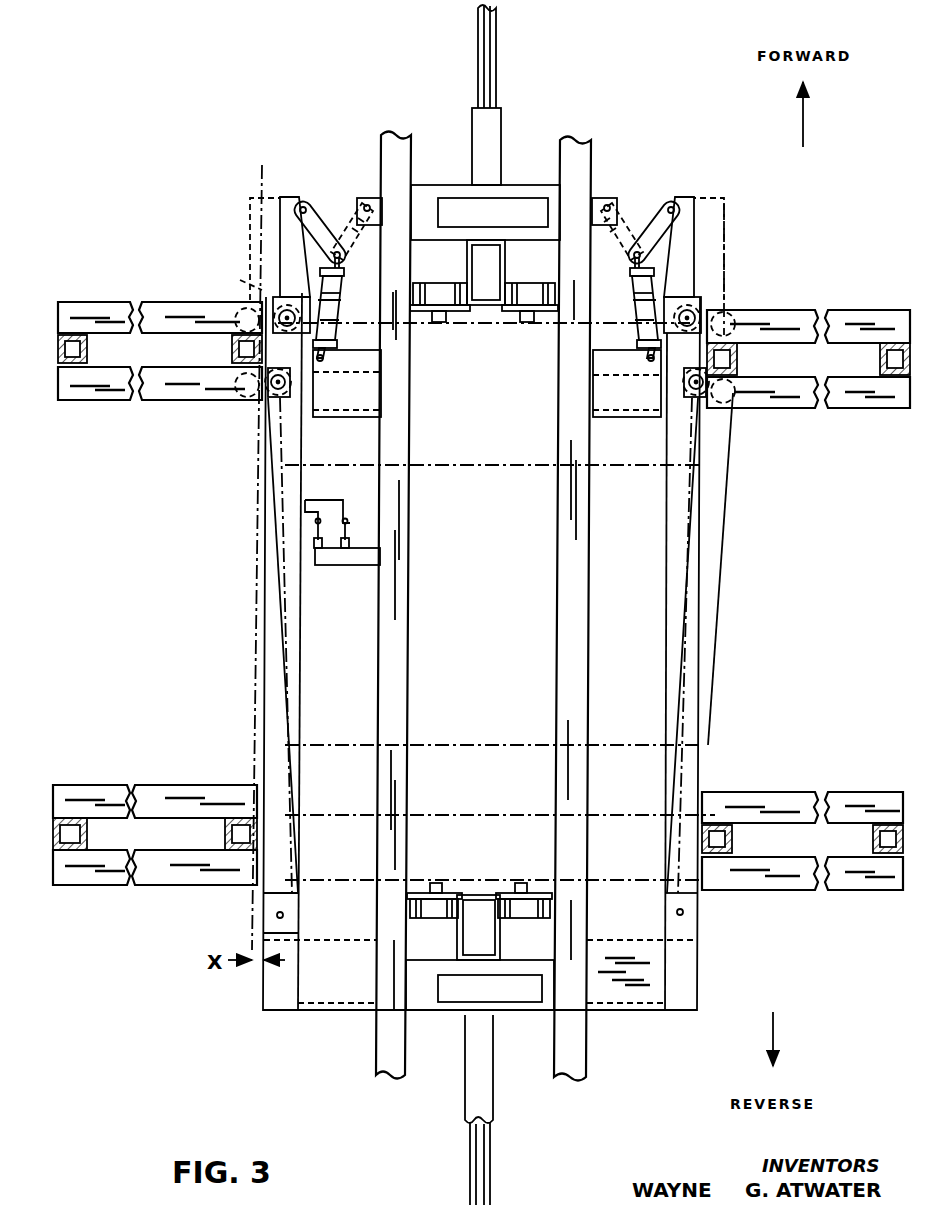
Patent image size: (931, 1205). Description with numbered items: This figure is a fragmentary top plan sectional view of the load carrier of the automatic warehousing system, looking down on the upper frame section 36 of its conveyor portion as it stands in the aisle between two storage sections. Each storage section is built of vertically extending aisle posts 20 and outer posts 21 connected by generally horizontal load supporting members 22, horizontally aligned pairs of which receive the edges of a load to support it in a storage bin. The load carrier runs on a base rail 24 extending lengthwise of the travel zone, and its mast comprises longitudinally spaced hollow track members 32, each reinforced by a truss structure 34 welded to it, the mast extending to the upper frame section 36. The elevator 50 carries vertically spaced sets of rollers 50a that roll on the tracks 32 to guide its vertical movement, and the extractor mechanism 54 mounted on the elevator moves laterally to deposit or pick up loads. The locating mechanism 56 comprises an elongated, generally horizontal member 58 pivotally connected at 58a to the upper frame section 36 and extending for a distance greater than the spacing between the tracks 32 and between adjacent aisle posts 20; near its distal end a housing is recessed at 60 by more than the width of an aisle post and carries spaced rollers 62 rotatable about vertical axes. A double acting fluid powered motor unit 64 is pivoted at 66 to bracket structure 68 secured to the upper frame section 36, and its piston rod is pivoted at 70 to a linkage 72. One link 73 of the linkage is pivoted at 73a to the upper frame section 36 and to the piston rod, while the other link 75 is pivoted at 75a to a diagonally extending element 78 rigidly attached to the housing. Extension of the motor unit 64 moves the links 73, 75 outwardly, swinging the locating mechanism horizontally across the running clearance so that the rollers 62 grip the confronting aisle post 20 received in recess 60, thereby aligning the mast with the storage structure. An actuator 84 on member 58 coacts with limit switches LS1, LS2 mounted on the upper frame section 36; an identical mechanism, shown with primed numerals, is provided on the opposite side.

The aisle posts 20 is at (230, 349).
The outer posts 21 is at (60, 351).
The load supporting members 22 is at (104, 301).
The base rail 24 is at (492, 70).
The track members 32 is at (504, 268).
The truss structure 34 is at (510, 186).
The upper frame section 36 is at (587, 540).
The elevator 50 is at (677, 553).
The rollers 50a is at (468, 320).
The extractor mechanism 54 is at (655, 632).
The locating mechanism 56 is at (300, 686).
The member 58 is at (258, 616).
The pivotal connection 58a is at (283, 915).
The recess 60 is at (292, 387).
The rollers 62 is at (266, 386).
The motor unit 64 is at (338, 308).
The pivot 66 is at (323, 360).
The bracket structure 68 is at (368, 401).
The pivot 70 is at (358, 230).
The linkage 72 is at (336, 252).
The link 73 is at (354, 216).
The pivot 73a is at (372, 211).
The link 75 is at (320, 216).
The pivot 75a is at (742, 200).
The element 78 is at (290, 230).
The actuator 84 is at (310, 500).
The limit switch LS1 is at (318, 554).
The limit switch LS2 is at (350, 547).